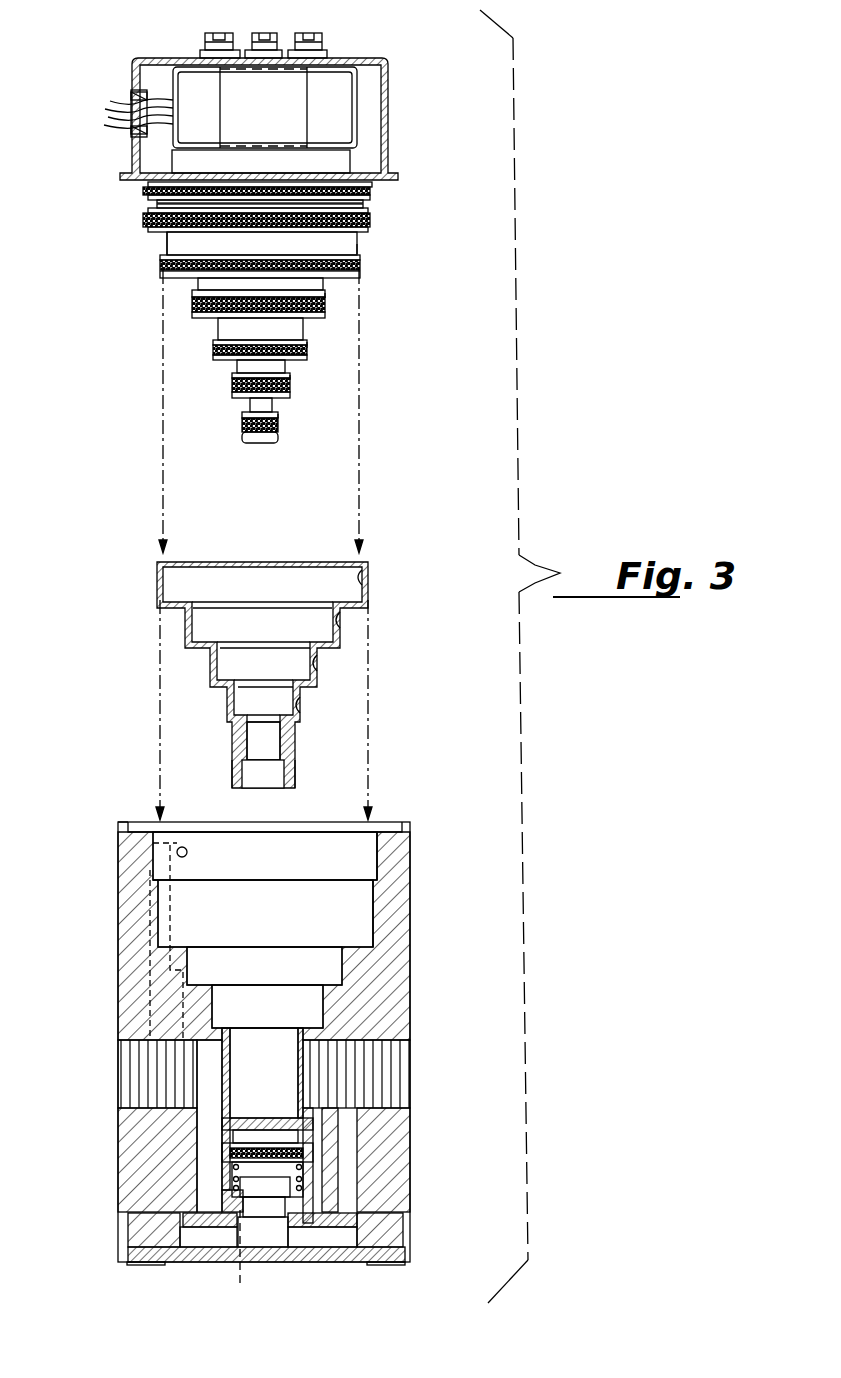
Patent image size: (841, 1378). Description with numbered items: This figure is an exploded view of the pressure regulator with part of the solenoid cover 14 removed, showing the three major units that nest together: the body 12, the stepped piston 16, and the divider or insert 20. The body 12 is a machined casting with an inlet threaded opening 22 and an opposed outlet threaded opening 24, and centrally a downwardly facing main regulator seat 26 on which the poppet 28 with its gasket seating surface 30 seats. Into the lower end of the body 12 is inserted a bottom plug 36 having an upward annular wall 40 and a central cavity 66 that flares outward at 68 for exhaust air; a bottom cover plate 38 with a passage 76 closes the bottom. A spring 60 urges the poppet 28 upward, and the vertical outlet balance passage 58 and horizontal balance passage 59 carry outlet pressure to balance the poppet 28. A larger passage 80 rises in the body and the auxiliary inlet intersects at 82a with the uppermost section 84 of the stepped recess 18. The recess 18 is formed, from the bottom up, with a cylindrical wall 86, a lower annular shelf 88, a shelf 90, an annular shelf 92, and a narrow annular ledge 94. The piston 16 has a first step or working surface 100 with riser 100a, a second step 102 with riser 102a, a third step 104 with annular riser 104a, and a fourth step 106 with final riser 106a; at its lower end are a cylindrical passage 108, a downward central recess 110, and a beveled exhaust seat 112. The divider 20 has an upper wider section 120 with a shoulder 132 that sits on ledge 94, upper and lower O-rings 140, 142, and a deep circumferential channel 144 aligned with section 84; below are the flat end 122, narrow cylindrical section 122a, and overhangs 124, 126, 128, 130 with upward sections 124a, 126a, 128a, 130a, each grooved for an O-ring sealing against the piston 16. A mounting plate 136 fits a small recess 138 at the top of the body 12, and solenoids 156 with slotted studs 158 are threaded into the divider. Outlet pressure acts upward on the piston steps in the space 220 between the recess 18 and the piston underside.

The body 12 is at (274, 1046).
The solenoid cover 14 is at (388, 120).
The stepped piston 16 is at (273, 674).
The stepped recess 18 is at (222, 910).
The divider or insert 20 is at (287, 397).
The inlet threaded opening 22 is at (135, 1105).
The outlet threaded opening 24 is at (308, 1112).
The main regulator seat 26 is at (393, 1058).
The poppet 28 is at (267, 1137).
The gasket seating surface 30 is at (253, 1118).
The bottom plug 36 is at (383, 1232).
The bottom cover plate 38 is at (378, 1257).
The upward annular wall 40 is at (227, 1173).
The vertical outlet balance passage 58 is at (347, 1143).
The horizontal balance passage 59 is at (327, 1240).
The spring 60 is at (303, 1182).
The central cavity 66 is at (268, 1232).
The flared recess 68 is at (205, 1240).
The passage 76 is at (239, 1262).
The larger passage 80 is at (158, 1003).
The intersection of auxiliary inlet opening 82a is at (187, 852).
The uppermost section of recess 84 is at (265, 856).
The cylindrical wall 86 is at (264, 1073).
The lower annular shelf 88 is at (253, 1028).
The shelf 90 is at (253, 985).
The annular shelf 92 is at (272, 947).
The narrow annular ledge 94 is at (352, 878).
The first step or working surface 100 is at (227, 710).
The upward riser 100a is at (305, 707).
The second step or working surface 102 is at (210, 675).
The upward riser 102a is at (320, 673).
The third step or working riser 104 is at (190, 638).
The upward annular riser 104a is at (347, 637).
The fourth step or working surface 106 is at (160, 590).
The final upward annular riser 106a is at (367, 575).
The cylindrical passage 108 is at (263, 742).
The downward central recess 110 is at (272, 772).
The beveled downward exhaust seat 112 is at (240, 790).
The upper wider section of divider 120 is at (148, 212).
The flat end 122 is at (263, 442).
The upward narrow cylindrical section 122a is at (275, 413).
The first annular outward overhang 124 is at (240, 398).
The upward section 124a is at (290, 375).
The second annular outward overhang 126 is at (227, 362).
The upward section 126a is at (307, 340).
The third annular outward overhang 128 is at (207, 317).
The upward section 128a is at (325, 295).
The fourth annular outward overhang 130 is at (180, 278).
The upward section 130a is at (360, 250).
The shoulder 132 is at (157, 233).
The mounting plate 136 is at (120, 176).
The small recess 138 is at (138, 817).
The upper O-ring 140 is at (372, 190).
The lower O-ring 142 is at (372, 221).
The deep circumferential channel 144 is at (365, 203).
The solenoid 156 is at (330, 102).
The slotted stud 158 is at (322, 38).
The space 220 is at (352, 927).